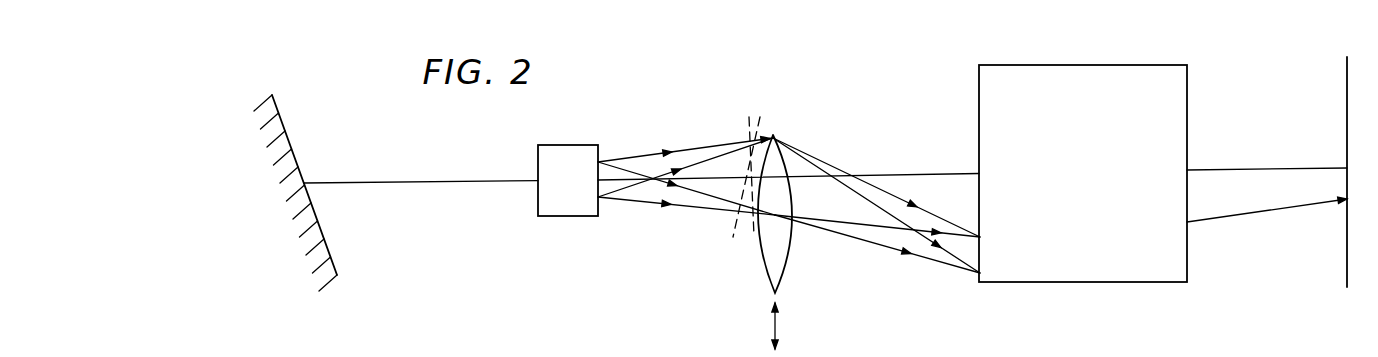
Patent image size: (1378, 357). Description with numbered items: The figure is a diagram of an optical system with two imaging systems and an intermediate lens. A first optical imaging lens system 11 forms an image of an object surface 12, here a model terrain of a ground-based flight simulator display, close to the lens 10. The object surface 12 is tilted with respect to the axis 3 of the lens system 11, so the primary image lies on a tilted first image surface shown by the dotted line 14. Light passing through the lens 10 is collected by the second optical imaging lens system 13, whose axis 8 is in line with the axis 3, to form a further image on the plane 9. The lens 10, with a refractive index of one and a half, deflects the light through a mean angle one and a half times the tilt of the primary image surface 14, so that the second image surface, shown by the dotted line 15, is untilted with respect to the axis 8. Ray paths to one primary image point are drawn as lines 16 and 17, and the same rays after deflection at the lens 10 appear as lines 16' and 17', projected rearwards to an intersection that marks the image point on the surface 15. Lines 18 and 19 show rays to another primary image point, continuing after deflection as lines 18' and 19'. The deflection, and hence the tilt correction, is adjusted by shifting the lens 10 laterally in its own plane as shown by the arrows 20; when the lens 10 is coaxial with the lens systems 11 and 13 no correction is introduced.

The axis 3 is at (437, 186).
The axis 8 is at (933, 172).
The plane 9 is at (1347, 128).
The lens 10 is at (782, 265).
The first optical imaging lens system 11 is at (568, 180).
The object surface 12 is at (284, 125).
The second optical imaging lens system 13 is at (1083, 173).
The first image surface 14 is at (735, 222).
The second image surface 15 is at (750, 236).
The line 16 is at (685, 134).
The line 17 is at (685, 152).
The line 18 is at (686, 207).
The line 19 is at (686, 224).
The line 16' is at (876, 204).
The line 17' is at (876, 178).
The line 18' is at (877, 255).
The line 19' is at (877, 248).
The arrows 20 is at (772, 322).